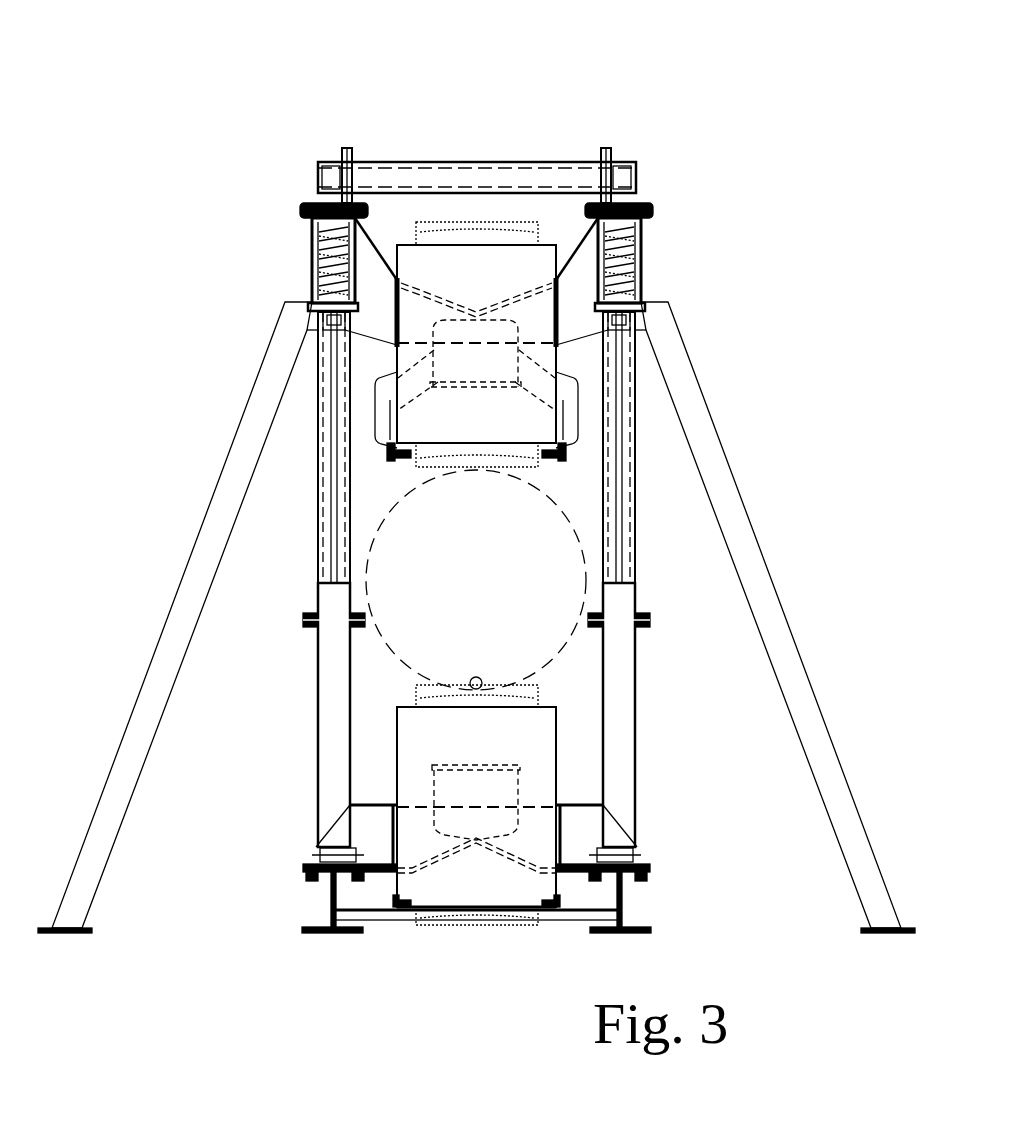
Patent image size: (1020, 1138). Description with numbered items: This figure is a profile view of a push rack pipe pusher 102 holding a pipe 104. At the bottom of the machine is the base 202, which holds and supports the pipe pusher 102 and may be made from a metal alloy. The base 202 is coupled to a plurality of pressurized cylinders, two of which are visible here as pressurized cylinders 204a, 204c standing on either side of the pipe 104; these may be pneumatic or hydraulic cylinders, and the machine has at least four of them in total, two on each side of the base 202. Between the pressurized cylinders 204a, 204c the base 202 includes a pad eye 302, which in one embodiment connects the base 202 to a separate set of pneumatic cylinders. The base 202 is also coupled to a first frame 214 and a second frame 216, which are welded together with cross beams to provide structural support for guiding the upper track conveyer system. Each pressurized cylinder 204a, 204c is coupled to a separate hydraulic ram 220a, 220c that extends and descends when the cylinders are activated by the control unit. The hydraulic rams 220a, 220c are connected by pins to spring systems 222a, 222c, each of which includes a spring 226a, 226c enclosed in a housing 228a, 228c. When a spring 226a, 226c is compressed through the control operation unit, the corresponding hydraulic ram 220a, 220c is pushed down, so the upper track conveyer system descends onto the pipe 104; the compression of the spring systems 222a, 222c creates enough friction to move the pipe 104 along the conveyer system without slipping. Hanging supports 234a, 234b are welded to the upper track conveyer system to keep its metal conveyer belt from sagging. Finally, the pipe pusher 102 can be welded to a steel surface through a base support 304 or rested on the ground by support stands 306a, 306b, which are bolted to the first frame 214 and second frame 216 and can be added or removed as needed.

The pipe pusher 102 is at (550, 58).
The pipe 104 is at (493, 589).
The base 202 is at (393, 920).
The pressurized cylinder 204a is at (623, 690).
The pressurized cylinder 204c is at (330, 690).
The first frame 214 is at (636, 178).
The second frame 216 is at (318, 178).
The hydraulic ram 220a is at (610, 548).
The hydraulic ram 220c is at (343, 548).
The spring system 222a is at (641, 258).
The spring system 222c is at (312, 255).
The spring 226a is at (645, 306).
The spring 226c is at (308, 306).
The housing 228a is at (653, 212).
The housing 228c is at (302, 208).
The hanging support 234a is at (560, 460).
The hanging support 234b is at (392, 460).
The pad eye 302 is at (362, 828).
The base support 304 is at (322, 926).
The support stand 306a is at (746, 516).
The support stand 306b is at (207, 516).